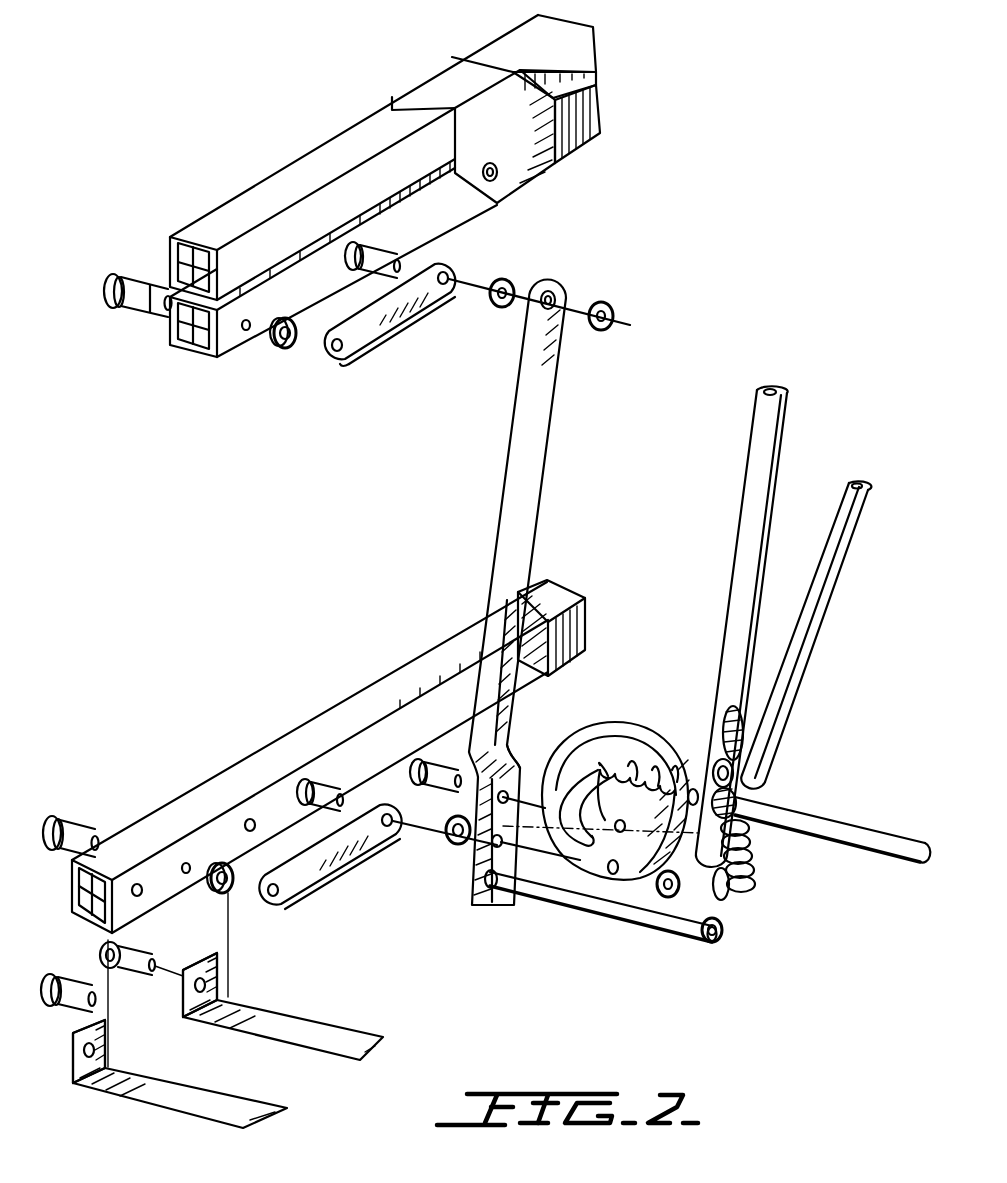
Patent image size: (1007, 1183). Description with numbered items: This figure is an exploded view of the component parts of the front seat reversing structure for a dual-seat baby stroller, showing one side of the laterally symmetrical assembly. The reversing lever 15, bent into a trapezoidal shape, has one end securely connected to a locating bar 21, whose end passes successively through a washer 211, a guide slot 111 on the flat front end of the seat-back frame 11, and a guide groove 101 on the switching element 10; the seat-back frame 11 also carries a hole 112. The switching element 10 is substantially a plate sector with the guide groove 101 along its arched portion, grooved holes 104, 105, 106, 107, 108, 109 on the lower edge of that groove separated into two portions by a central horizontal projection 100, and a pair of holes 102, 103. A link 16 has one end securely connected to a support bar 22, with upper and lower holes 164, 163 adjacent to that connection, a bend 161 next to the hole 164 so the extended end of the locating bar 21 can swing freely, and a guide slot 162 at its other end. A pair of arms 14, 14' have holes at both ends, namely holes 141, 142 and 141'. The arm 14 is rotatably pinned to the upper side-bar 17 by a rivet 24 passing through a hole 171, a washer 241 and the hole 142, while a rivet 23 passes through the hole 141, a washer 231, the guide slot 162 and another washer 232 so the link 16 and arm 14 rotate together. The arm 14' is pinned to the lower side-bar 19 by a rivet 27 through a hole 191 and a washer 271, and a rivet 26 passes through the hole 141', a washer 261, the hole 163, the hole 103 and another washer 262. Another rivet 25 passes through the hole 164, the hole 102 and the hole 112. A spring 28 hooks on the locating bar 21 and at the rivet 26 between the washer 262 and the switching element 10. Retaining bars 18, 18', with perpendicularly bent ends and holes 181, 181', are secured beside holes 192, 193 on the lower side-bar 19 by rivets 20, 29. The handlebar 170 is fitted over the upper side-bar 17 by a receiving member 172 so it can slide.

The switching element 10 is at (590, 884).
The horizontal projection 100 is at (618, 762).
The guide groove 101 is at (622, 820).
The hole 102 is at (642, 878).
The hole 103 is at (613, 874).
The grooved hole 104 is at (678, 752).
The grooved hole 105 is at (658, 760).
The grooved hole 106 is at (630, 758).
The grooved hole 107 is at (594, 756).
The grooved hole 108 is at (564, 786).
The grooved hole 109 is at (572, 788).
The seat-back frame 11 is at (758, 518).
The guide slot 111 is at (744, 768).
The hole 112 is at (680, 884).
The arm 14 is at (390, 317).
The arm 14' is at (330, 856).
The hole 141 is at (445, 311).
The hole 141' is at (438, 842).
The hole 142 is at (336, 352).
The reversing lever 15 is at (815, 610).
The link 16 is at (532, 484).
The bend 161 is at (512, 750).
The guide slot 162 is at (554, 294).
The lower hole 163 is at (475, 906).
The upper hole 164 is at (498, 846).
The upper side-bar 17 is at (580, 138).
The handlebar 170 is at (315, 158).
The hole 171 is at (246, 331).
The receiving member 172 is at (422, 86).
The retaining bar 18 is at (283, 1016).
The retaining bar 18' is at (180, 1090).
The hole 181 is at (193, 966).
The hole 181' is at (83, 1080).
The lower side-bar 19 is at (222, 766).
The hole 191 is at (186, 862).
The hole 192 is at (248, 818).
The hole 193 is at (136, 882).
The rivet 20 is at (142, 970).
The locating bar 21 is at (858, 842).
The washer 211 is at (758, 776).
The support bar 22 is at (692, 946).
The rivet 23 is at (398, 250).
The washer 231 is at (508, 280).
The washer 232 is at (612, 308).
The rivet 24 is at (143, 306).
The washer 241 is at (285, 348).
The rivet 25 is at (450, 790).
The rivet 26 is at (306, 780).
The washer 261 is at (450, 844).
The washer 262 is at (721, 904).
The rivet 27 is at (88, 832).
The washer 271 is at (230, 894).
The spring 28 is at (752, 860).
The rivet 29 is at (70, 976).